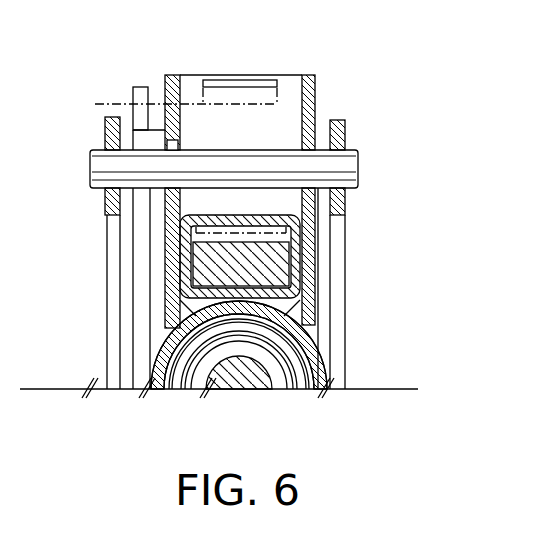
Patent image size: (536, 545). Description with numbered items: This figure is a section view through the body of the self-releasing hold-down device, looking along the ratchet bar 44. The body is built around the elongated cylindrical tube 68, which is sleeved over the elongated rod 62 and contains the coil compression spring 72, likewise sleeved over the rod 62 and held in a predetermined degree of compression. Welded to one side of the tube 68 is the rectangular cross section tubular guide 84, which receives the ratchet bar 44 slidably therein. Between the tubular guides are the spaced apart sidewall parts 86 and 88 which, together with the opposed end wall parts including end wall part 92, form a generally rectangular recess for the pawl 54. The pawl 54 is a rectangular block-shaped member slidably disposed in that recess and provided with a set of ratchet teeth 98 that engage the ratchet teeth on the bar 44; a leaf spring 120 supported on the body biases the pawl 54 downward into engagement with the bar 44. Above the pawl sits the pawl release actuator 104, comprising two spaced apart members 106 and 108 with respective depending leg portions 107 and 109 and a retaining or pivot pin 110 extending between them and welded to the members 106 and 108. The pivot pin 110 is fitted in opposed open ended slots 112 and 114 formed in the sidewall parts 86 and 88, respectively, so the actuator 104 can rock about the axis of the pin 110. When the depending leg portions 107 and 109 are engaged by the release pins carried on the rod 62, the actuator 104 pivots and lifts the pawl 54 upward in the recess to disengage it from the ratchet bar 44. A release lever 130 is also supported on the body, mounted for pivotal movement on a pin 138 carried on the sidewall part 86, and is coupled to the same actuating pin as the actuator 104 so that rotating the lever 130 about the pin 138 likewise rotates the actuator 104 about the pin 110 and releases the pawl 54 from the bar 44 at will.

The elongated bar 44 is at (205, 262).
The pawl 54 is at (108, 104).
The elongated rod 62 is at (238, 382).
The elongated cylindrical tube 68 is at (139, 386).
The coil compression spring 72 is at (282, 383).
The tubular guide 84 is at (302, 278).
The sidewall part 86 is at (172, 75).
The sidewall part 88 is at (308, 76).
The end wall part 92 is at (186, 80).
The ratchet teeth 98 is at (280, 258).
The pawl release actuator 104 is at (356, 137).
The arm member 106 is at (345, 212).
The depending leg portion 107 is at (345, 337).
The arm member 108 is at (105, 208).
The depending leg portion 109 is at (107, 335).
The pivot pin 110 is at (358, 174).
The open ended slot 112 is at (178, 158).
The open ended slot 114 is at (300, 140).
The leaf spring 120 is at (245, 80).
The release lever 130 is at (135, 86).
The pin 138 is at (112, 136).